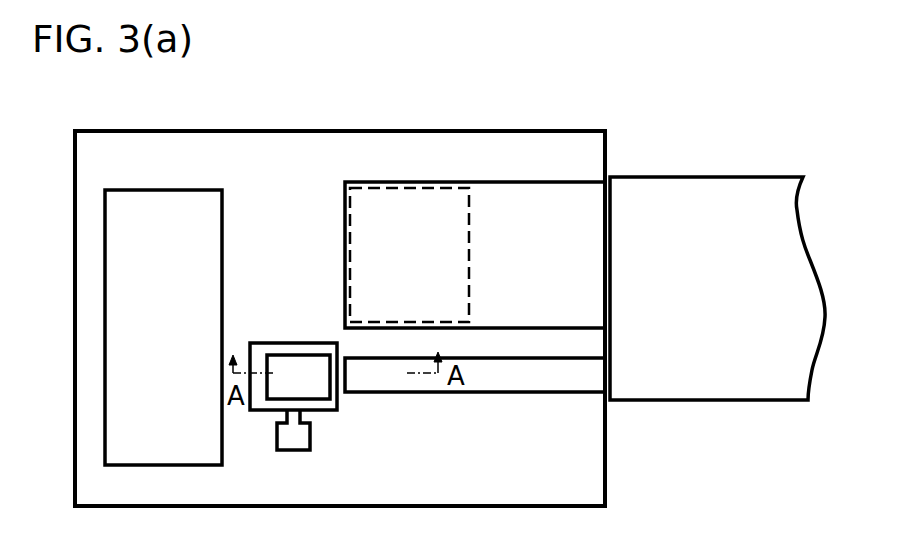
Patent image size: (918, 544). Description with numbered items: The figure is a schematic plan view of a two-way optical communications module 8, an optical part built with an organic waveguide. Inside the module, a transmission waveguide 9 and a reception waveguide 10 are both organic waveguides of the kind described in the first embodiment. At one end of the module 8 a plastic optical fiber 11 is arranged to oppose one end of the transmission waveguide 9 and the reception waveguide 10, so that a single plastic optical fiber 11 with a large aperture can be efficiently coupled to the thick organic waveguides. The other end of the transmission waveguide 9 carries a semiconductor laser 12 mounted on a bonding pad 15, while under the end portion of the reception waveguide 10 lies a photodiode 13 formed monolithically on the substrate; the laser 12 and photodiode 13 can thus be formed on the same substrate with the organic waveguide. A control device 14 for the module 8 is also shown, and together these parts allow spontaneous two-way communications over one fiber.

The two-way optical communications module 8 is at (559, 130).
The transmission waveguide 9 is at (571, 383).
The reception waveguide 10 is at (549, 200).
The plastic optical fiber 11 is at (743, 383).
The semiconductor laser 12 is at (315, 357).
The photodiode 13 is at (425, 184).
The control device 14 is at (205, 455).
The bonding pad 15 is at (260, 347).